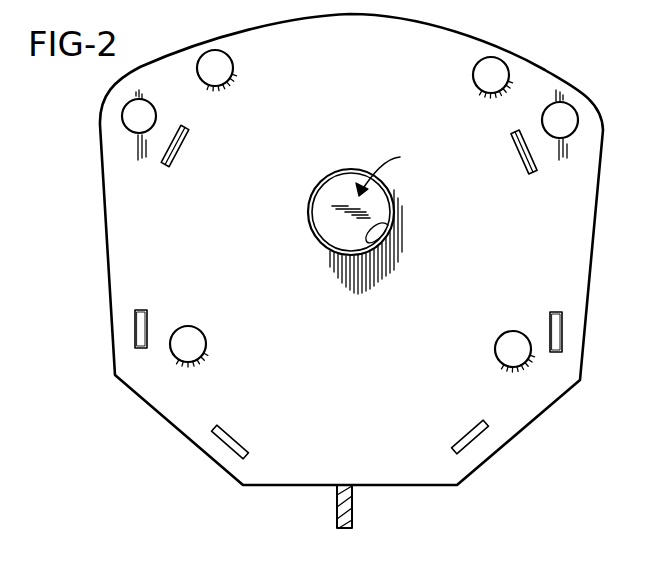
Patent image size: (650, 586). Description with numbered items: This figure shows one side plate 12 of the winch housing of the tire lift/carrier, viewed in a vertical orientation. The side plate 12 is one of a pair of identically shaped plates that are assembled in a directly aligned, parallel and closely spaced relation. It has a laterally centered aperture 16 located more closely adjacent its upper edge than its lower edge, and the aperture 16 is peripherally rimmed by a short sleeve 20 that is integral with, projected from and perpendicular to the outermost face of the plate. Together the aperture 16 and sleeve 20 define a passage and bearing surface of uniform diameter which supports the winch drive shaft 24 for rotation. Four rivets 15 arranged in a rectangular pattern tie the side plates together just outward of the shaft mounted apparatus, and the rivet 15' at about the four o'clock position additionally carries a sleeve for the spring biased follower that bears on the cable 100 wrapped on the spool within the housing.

The side plate 12 is at (343, 113).
The rivets 15 is at (350, 185).
The rivet 15' is at (507, 328).
The aperture 16 is at (386, 226).
The sleeve 20 is at (318, 185).
The winch drive shaft 24 is at (392, 172).
The cable 100 is at (337, 510).